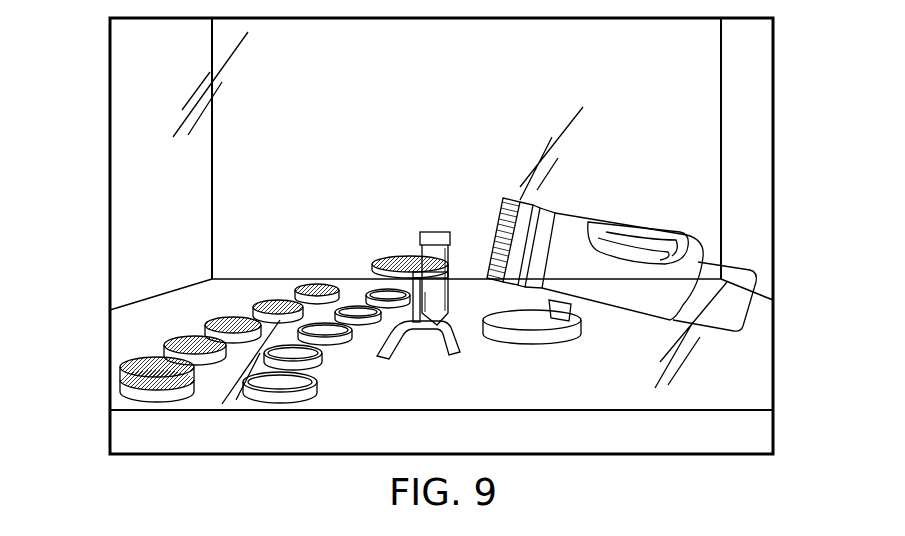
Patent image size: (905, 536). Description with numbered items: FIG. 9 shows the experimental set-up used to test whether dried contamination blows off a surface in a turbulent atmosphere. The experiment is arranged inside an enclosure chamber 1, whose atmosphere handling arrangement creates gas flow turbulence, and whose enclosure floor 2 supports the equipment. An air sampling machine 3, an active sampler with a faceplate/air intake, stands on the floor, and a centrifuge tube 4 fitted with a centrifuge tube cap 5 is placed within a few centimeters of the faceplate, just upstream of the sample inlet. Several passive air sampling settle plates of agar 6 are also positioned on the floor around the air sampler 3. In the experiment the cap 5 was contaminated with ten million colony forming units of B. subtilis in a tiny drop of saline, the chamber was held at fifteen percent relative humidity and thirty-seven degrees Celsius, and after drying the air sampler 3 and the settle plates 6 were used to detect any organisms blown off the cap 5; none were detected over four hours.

The enclosure chamber 1 is at (700, 149).
The enclosure floor 2 is at (510, 375).
The air sampling machine 3 is at (613, 287).
The centrifuge tube 4 is at (420, 254).
The centrifuge tube cap 5 is at (421, 234).
The passive air sampling settle plates of agar 6 is at (122, 383).